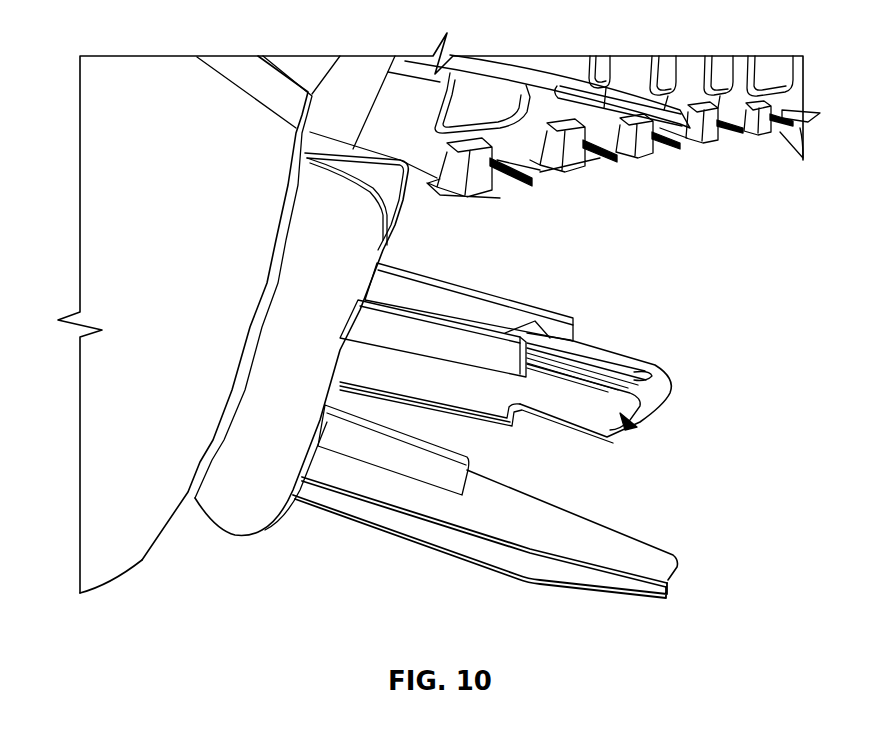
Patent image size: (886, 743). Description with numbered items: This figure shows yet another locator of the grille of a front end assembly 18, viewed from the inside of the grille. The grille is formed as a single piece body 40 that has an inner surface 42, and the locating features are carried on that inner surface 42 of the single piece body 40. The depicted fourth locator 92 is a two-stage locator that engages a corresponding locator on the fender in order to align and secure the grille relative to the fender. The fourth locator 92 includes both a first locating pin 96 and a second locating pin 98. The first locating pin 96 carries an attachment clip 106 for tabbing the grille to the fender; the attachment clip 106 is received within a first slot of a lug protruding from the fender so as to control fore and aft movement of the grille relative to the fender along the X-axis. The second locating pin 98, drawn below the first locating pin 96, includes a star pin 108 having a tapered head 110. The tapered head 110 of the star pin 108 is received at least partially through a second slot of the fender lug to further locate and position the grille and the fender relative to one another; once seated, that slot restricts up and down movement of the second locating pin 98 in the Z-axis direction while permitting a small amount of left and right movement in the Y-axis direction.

The vehicle body / door structure 18 is at (90, 222).
The single piece body 40 is at (220, 102).
The inner surface 42 is at (142, 560).
The fourth locator 92 is at (280, 546).
The first locating pin 96 is at (506, 282).
The second locating pin 98 is at (420, 535).
The attachment clip 106 is at (660, 398).
The star pin 108 is at (618, 548).
The tapered head 110 is at (668, 584).